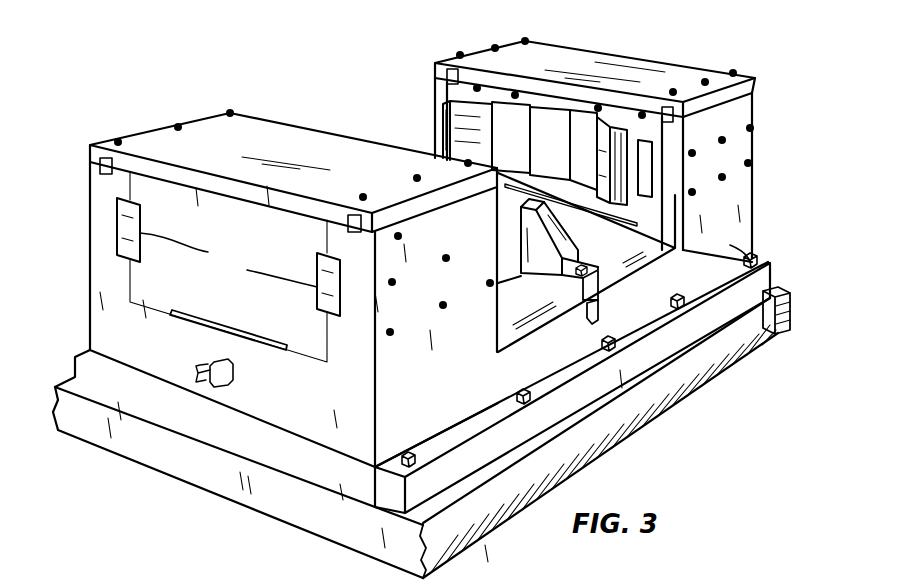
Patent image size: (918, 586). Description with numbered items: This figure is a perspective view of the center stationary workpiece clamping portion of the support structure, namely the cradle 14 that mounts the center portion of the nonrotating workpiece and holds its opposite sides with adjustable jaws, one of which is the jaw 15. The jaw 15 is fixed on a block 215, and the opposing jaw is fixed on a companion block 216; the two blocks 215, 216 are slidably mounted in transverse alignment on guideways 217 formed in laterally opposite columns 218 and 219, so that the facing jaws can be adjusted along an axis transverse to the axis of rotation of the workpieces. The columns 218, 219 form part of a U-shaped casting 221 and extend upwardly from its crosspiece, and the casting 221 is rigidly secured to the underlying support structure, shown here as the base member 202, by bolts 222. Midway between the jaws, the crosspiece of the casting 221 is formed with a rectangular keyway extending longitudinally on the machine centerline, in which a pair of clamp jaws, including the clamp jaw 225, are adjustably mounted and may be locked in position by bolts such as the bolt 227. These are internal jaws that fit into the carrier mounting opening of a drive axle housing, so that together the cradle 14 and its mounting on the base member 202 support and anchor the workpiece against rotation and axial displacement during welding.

The cradle structure 14 is at (727, 247).
The adjustable jaw 15 is at (583, 132).
The base 202 is at (308, 512).
The block 215 is at (716, 124).
The block 216 is at (308, 349).
The guideways 217 is at (700, 214).
The column 218 is at (438, 222).
The column 219 is at (756, 96).
The U-shaped casting 221 is at (538, 320).
The bolts 222 is at (407, 452).
The clamp jaw 225 is at (543, 273).
The bolt 227 is at (587, 269).